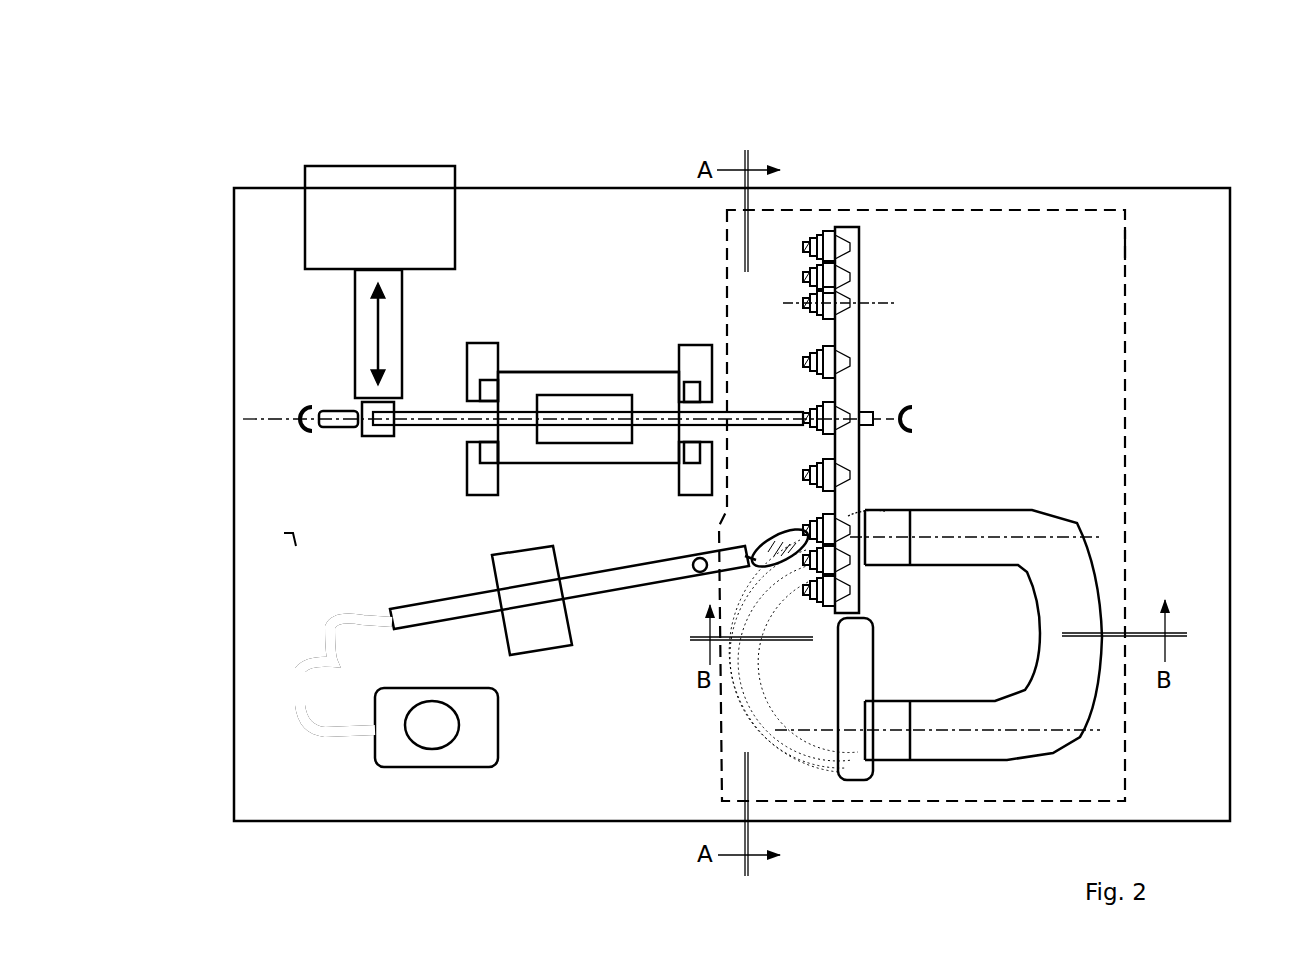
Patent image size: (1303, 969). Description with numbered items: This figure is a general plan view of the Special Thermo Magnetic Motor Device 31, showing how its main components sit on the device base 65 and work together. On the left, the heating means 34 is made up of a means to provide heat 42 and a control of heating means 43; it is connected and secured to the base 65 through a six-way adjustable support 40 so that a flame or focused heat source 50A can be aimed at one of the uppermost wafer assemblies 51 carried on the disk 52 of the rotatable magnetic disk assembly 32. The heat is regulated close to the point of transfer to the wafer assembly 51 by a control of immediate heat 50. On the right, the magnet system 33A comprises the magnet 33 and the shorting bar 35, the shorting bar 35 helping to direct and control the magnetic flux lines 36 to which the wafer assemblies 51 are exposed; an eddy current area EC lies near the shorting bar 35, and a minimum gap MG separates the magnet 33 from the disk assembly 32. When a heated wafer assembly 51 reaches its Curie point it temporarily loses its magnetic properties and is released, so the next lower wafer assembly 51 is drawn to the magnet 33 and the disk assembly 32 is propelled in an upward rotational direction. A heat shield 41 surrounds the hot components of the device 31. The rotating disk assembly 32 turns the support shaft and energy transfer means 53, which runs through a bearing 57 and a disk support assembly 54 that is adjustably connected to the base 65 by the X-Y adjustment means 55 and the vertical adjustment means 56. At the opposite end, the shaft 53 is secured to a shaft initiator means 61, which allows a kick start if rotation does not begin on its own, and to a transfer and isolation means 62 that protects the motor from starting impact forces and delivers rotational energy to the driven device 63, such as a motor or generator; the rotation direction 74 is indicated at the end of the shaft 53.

The Special Thermo Magnetic Motor Device 31 is at (998, 115).
The rotatable magnetic disk assembly 32 is at (925, 277).
The magnet 33 is at (1067, 707).
The magnet system 33A is at (1073, 782).
The heating means 34 is at (567, 693).
The shorting bar 35 is at (858, 720).
The magnetic flux lines 36 is at (772, 680).
The 6-way adjustable support for heating means 40 is at (543, 622).
The heat shield 41 is at (1122, 247).
The means to provide heat 42 is at (387, 750).
The control of heating means 43 is at (437, 730).
The control of immediate heat 50 is at (702, 572).
The flame or focused heat source 50A is at (762, 568).
The wafer assembly 51 is at (838, 305).
The disk 52 is at (845, 332).
The support shaft and energy transfer means 53 is at (385, 404).
The disk support assembly 54 is at (553, 382).
The support assembly X-Y adjustment means 55 is at (434, 410).
The support assembly vertical (Z) adjustment means 56 is at (491, 380).
The bearing 57 is at (603, 392).
The shaft initiator means 61 is at (364, 435).
The transfer and isolation means 62 is at (365, 319).
The driven device 63 is at (358, 188).
The Special Thermo Magnetic Motor Device base 65 is at (295, 540).
The rotation of support/turning shaft 74 is at (357, 414).
The minimum gap between magnet and disk assembly MG is at (868, 500).
The eddy current area near shorting bar EC is at (858, 612).